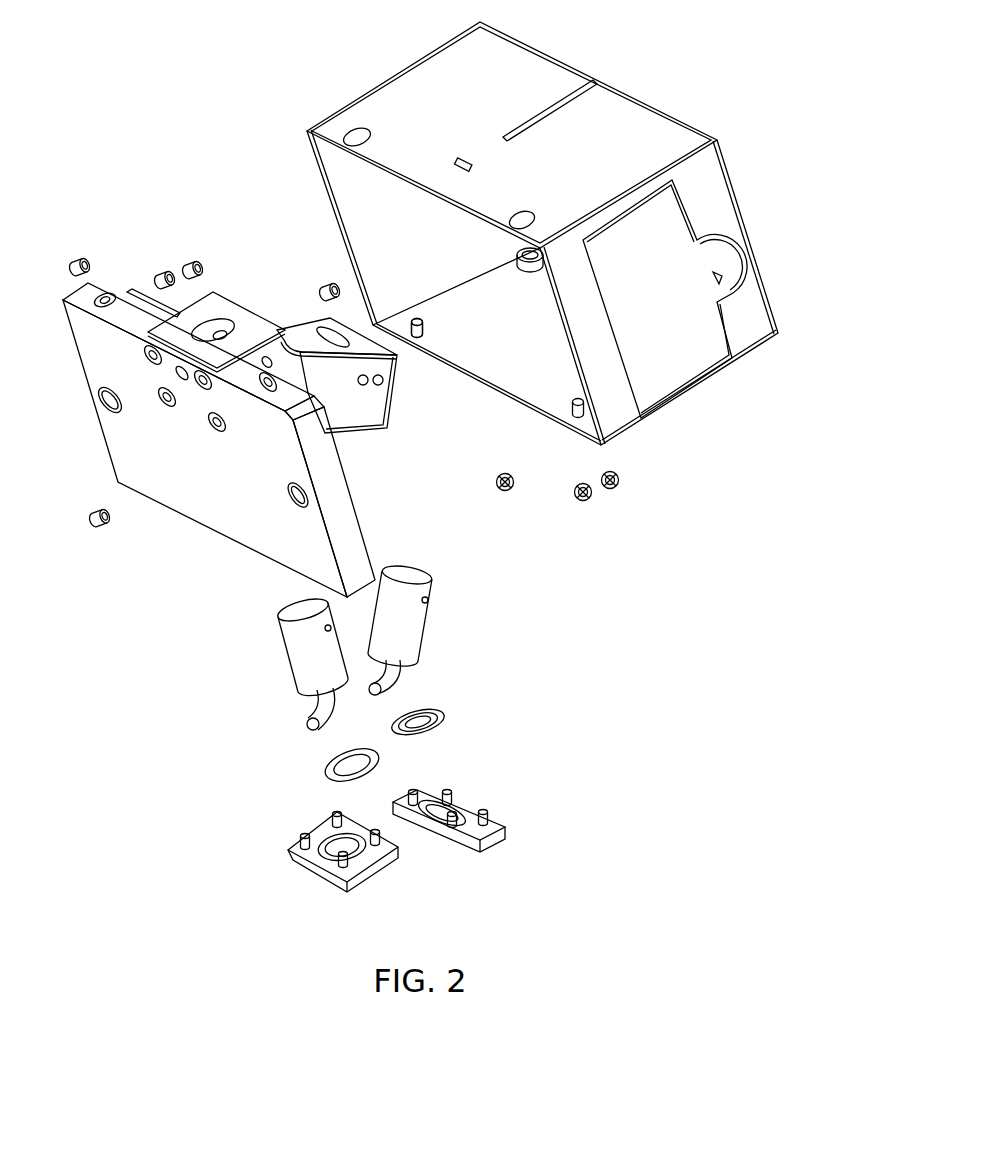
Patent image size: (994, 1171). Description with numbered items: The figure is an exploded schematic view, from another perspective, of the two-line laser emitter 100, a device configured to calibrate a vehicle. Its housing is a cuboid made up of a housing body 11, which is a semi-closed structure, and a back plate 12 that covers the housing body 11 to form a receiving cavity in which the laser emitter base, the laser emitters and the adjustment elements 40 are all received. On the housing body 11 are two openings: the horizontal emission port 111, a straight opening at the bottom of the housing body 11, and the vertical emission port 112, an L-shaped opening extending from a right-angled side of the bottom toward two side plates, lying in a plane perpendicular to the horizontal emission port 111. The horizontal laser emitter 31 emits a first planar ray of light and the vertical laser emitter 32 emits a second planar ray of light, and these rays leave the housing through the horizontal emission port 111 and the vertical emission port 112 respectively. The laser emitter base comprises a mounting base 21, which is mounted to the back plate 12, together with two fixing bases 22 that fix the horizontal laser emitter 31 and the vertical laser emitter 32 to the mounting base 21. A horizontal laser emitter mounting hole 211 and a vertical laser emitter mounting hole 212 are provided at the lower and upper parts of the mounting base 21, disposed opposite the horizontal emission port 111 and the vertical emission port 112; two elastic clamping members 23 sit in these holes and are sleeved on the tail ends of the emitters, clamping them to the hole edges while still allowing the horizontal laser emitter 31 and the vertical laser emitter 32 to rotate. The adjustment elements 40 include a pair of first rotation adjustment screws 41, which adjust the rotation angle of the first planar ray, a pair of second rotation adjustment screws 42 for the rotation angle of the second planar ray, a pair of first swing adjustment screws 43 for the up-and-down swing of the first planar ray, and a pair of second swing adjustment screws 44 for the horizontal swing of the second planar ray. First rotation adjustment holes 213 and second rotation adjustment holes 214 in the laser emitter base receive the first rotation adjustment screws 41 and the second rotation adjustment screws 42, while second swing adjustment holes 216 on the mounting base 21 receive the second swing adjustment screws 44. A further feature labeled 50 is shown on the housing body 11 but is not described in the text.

The two-line laser emitter 100 is at (175, 49).
The housing body 11 is at (657, 145).
The horizontal emission port 111 is at (463, 157).
The vertical emission port 112 is at (552, 104).
The back plate 12 is at (183, 470).
The mounting base 21 is at (262, 332).
The horizontal laser emitter mounting hole 211 is at (225, 318).
The vertical laser emitter mounting hole 212 is at (322, 330).
The first rotation adjustment holes 213 is at (275, 392).
The second rotation adjustment holes 214 is at (392, 405).
The second swing adjustment holes 216 is at (372, 388).
The fixing bases 22 is at (398, 853).
The elastic clamping members 23 is at (410, 730).
The horizontal laser emitter 31 is at (303, 635).
The vertical laser emitter 32 is at (413, 627).
The adjustment elements 40 is at (487, 556).
The first rotation adjustment screws 41 is at (513, 483).
The second rotation adjustment screws 42 is at (625, 485).
The first swing adjustment screws 43 is at (420, 333).
The second swing adjustment screws 44 is at (595, 497).
The access opening 50 is at (707, 352).